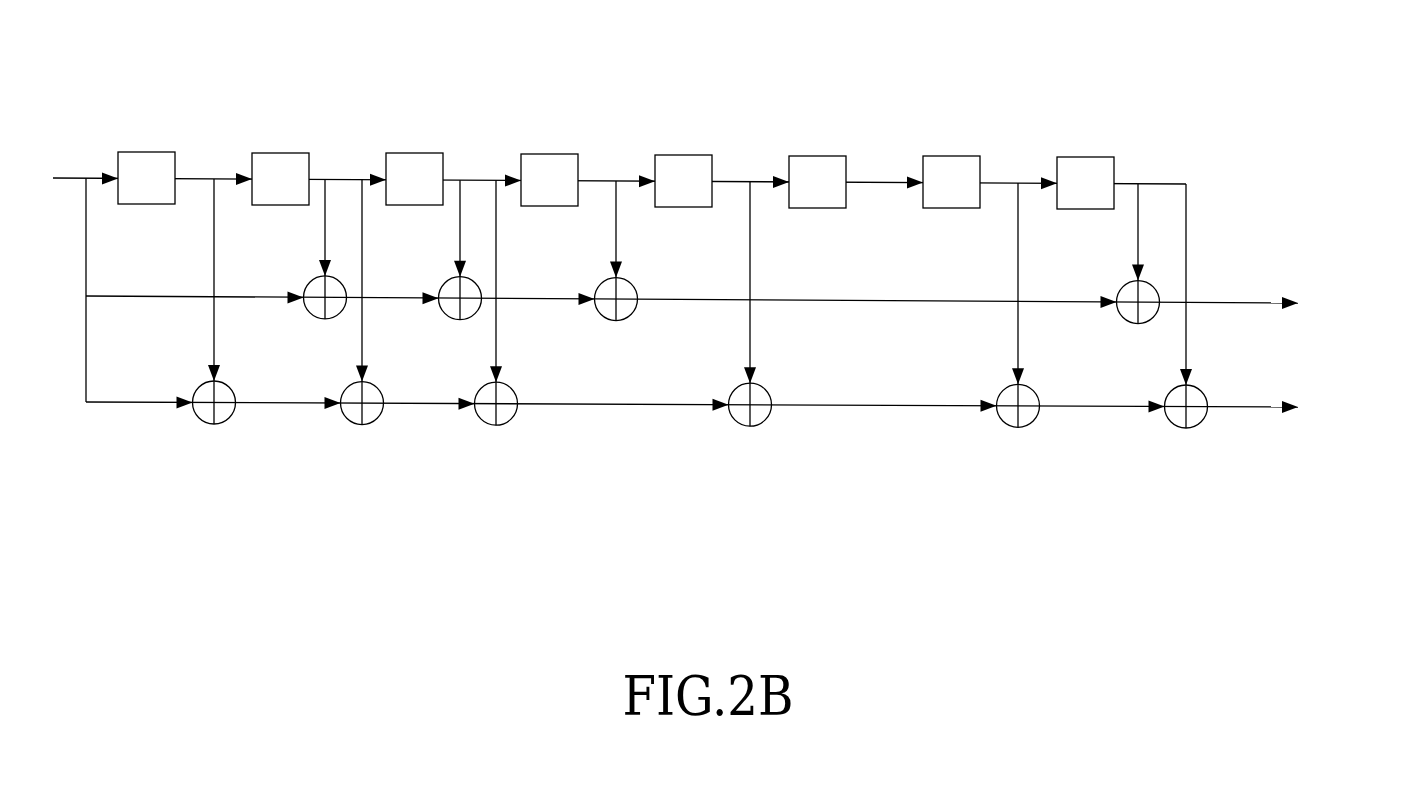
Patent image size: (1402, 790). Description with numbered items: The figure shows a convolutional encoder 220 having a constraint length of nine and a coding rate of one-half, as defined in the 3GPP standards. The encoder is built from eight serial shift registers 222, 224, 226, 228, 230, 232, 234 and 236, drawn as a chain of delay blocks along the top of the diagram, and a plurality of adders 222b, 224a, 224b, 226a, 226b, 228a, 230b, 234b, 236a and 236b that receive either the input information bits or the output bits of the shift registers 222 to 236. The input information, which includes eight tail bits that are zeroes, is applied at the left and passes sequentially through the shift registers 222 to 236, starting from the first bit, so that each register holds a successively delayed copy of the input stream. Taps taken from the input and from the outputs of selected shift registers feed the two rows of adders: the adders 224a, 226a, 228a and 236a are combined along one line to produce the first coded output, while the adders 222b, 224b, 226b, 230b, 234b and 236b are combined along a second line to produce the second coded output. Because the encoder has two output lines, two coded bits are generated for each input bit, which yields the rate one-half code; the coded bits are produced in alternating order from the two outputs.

The convolutional encoder 220 is at (1172, 51).
The shift register 222 is at (146, 152).
The shift register 224 is at (281, 153).
The shift register 226 is at (415, 153).
The shift register 228 is at (549, 154).
The shift register 230 is at (683, 155).
The shift register 232 is at (818, 156).
The shift register 234 is at (952, 156).
The shift register 236 is at (1086, 157).
The adder 222b is at (214, 424).
The adder 224a is at (325, 319).
The adder 224b is at (362, 425).
The adder 226a is at (460, 320).
The adder 226b is at (496, 425).
The adder 228a is at (616, 321).
The adder 230b is at (750, 426).
The adder 234b is at (1018, 427).
The adder 236a is at (1138, 324).
The adder 236b is at (1186, 428).